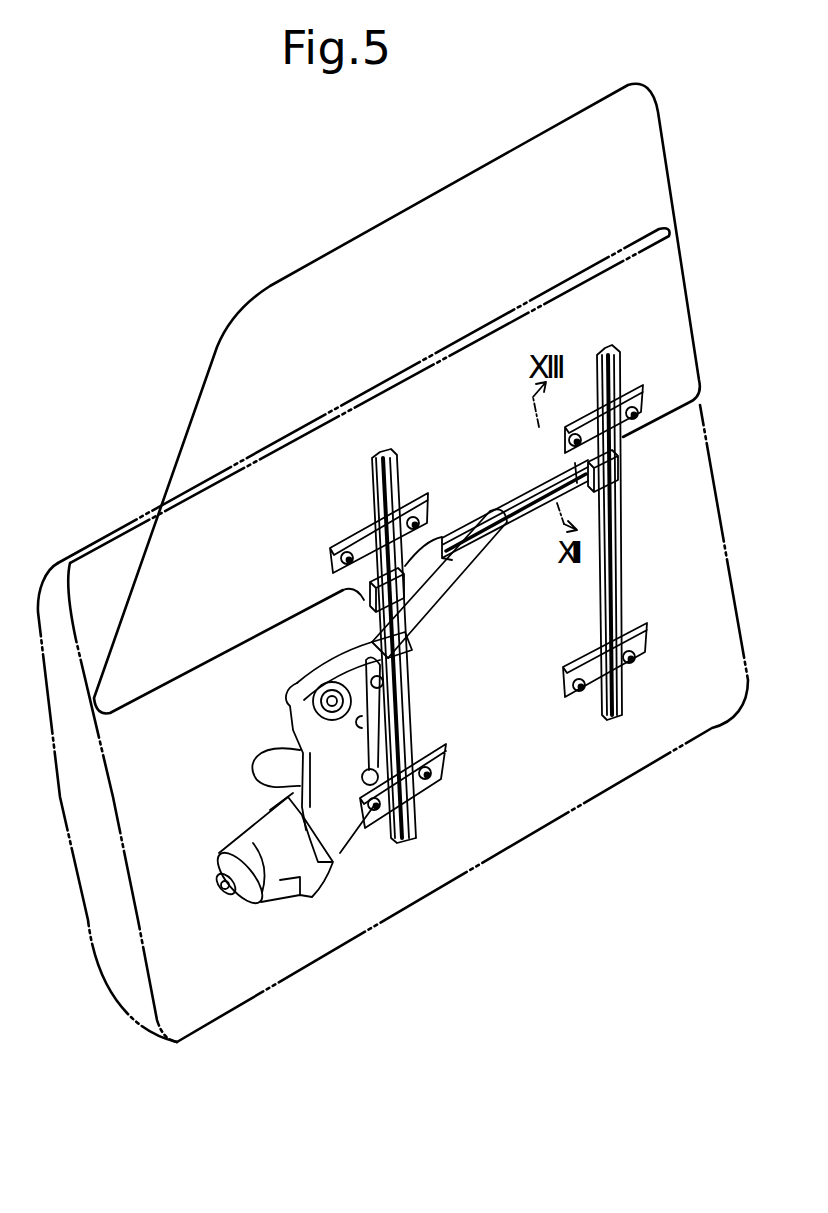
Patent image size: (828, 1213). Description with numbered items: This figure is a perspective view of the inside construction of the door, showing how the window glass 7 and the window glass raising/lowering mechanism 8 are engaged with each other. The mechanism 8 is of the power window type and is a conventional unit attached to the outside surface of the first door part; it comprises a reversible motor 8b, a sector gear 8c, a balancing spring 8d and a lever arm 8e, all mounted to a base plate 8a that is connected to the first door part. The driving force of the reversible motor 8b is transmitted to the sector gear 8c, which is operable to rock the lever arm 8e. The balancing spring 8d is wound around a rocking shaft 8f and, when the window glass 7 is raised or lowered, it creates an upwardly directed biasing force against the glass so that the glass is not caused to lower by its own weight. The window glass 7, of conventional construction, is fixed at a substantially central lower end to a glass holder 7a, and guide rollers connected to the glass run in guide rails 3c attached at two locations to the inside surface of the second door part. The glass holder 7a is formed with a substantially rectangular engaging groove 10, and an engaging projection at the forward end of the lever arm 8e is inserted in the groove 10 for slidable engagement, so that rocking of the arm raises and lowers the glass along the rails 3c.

The window glass 7 is at (221, 345).
The glass holder 7a is at (528, 510).
The engaging groove 10 is at (537, 478).
The guide rails 3c is at (373, 497).
The window glass raising/lowering mechanism 8 is at (358, 655).
The base plate 8a is at (300, 708).
The reversible motor 8b is at (258, 836).
The sector gear 8c is at (400, 660).
The balancing spring 8d is at (322, 702).
The lever arm 8e is at (450, 594).
The rocking shaft 8f is at (338, 707).